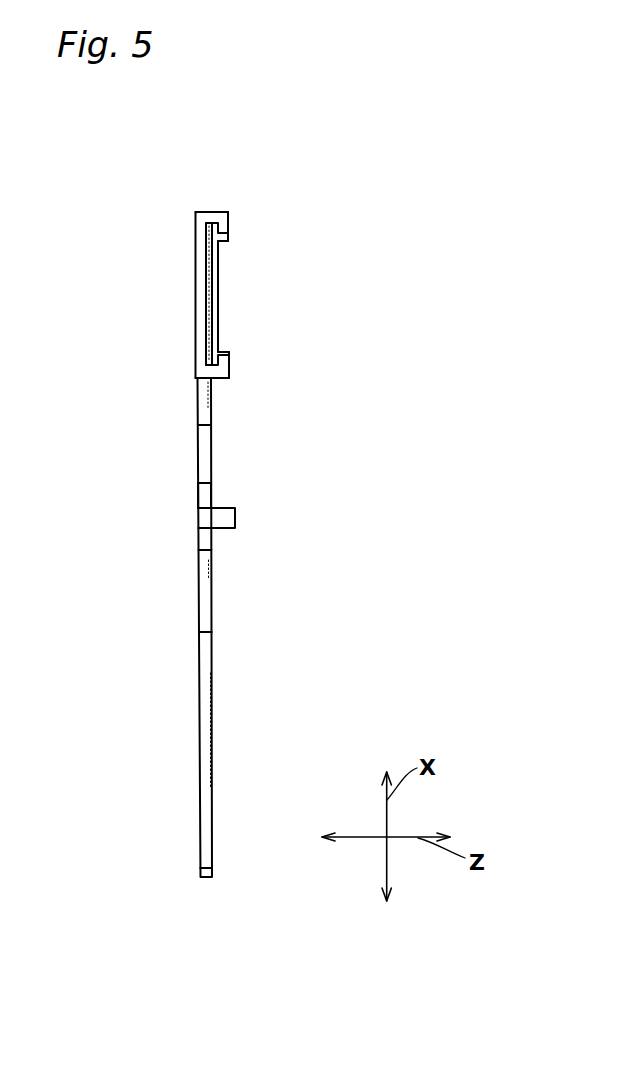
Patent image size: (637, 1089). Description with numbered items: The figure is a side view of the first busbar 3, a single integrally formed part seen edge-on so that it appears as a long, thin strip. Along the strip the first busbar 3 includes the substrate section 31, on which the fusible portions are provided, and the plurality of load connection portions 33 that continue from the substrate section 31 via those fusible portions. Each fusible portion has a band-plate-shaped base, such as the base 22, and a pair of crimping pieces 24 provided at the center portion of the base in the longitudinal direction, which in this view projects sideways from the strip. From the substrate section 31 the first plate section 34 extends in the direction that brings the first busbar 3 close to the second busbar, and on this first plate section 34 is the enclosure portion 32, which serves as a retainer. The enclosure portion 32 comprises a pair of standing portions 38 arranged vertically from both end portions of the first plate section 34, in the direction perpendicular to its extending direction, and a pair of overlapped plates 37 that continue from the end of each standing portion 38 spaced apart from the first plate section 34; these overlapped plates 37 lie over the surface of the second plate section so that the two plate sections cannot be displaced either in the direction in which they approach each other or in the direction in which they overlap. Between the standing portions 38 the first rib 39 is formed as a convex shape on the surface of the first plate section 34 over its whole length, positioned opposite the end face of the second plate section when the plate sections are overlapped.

The first busbar 3 is at (317, 270).
The base 22 is at (207, 496).
The crimping piece 24 is at (228, 518).
The substrate section 31 is at (207, 450).
The enclosure portion 32 is at (226, 211).
The load connection portion 33 is at (211, 722).
The first plate section 34 is at (195, 268).
The overlapped plate 37 is at (223, 230).
The standing portion 38 is at (212, 223).
The first rib 39 is at (212, 293).